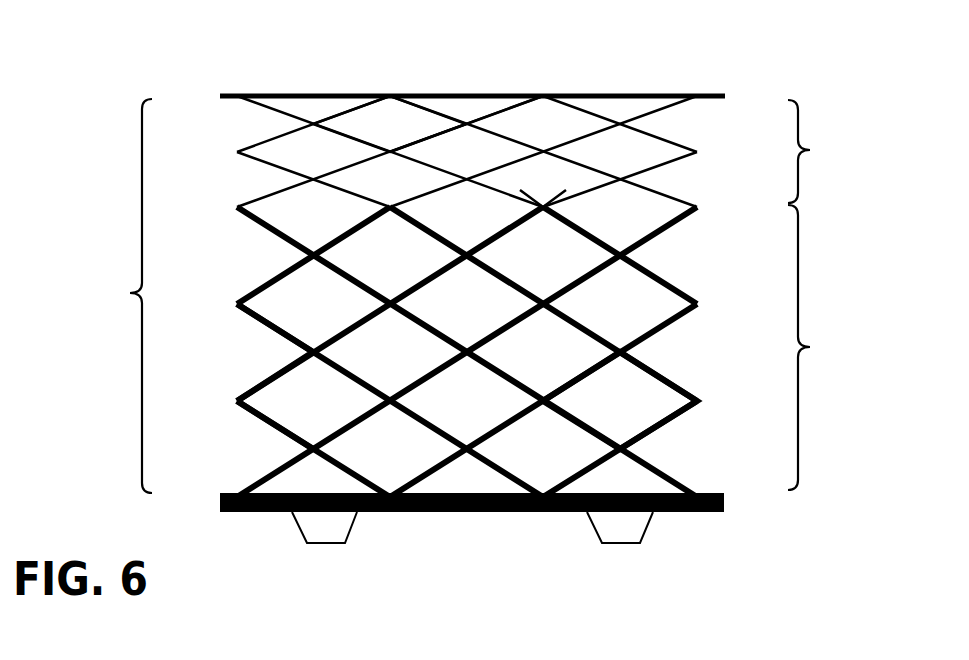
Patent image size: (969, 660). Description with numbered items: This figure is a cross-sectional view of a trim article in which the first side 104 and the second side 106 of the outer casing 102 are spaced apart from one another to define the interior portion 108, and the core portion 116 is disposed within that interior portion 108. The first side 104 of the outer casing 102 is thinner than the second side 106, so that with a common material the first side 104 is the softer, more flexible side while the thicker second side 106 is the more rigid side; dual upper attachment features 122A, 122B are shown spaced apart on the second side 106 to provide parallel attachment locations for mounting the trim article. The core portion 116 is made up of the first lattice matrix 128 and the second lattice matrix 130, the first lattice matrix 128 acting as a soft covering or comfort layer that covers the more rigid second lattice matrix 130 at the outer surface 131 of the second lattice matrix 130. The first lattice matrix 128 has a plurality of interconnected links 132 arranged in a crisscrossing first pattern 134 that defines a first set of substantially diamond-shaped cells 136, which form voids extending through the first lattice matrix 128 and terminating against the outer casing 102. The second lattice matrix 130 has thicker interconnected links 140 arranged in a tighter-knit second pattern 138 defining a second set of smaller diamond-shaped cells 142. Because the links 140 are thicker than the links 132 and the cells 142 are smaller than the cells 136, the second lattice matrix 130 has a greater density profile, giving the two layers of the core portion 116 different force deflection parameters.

The outer casing 102 is at (713, 94).
The first side 104 is at (615, 94).
The second side 106 is at (470, 513).
The interior portion 108 is at (669, 350).
The core portion 116 is at (119, 296).
The upper attachment feature 122A is at (351, 524).
The upper attachment feature 122B is at (649, 523).
The first lattice matrix 128 is at (506, 139).
The second lattice matrix 130 is at (504, 351).
The outer surface 131 is at (546, 206).
The interconnected links 132 is at (495, 112).
The first pattern 134 is at (243, 178).
The first set of cells 136 is at (384, 123).
The second pattern 138 is at (245, 370).
The interconnected links 140 is at (262, 426).
The second set of cells 142 is at (615, 392).